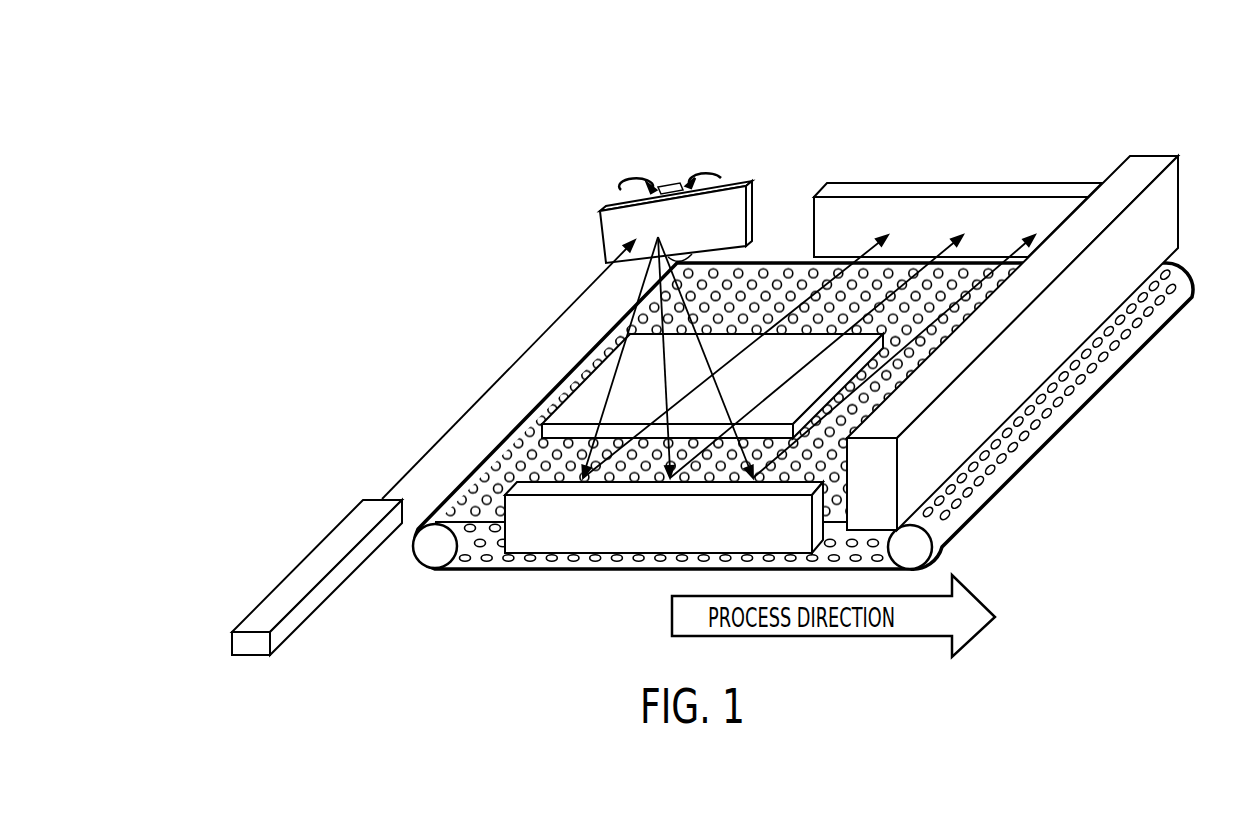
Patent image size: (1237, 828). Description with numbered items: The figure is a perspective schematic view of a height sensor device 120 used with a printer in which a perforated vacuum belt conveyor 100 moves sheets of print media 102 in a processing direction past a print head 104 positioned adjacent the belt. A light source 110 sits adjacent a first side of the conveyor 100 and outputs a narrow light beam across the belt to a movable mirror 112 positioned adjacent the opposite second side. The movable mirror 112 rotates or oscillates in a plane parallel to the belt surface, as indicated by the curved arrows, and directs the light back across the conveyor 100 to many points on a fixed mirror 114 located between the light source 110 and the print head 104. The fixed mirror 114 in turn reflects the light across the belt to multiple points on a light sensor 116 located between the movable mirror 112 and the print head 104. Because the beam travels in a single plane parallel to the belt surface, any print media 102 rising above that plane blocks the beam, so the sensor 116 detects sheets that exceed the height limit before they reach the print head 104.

The conveyor 100 is at (463, 480).
The print media 102 is at (567, 375).
The print head 104 is at (1138, 155).
The light source 110 is at (320, 542).
The movable mirror 112 is at (707, 227).
The fixed mirror 114 is at (646, 560).
The light sensor 116 is at (945, 185).
The height sensor device 120 is at (702, 356).